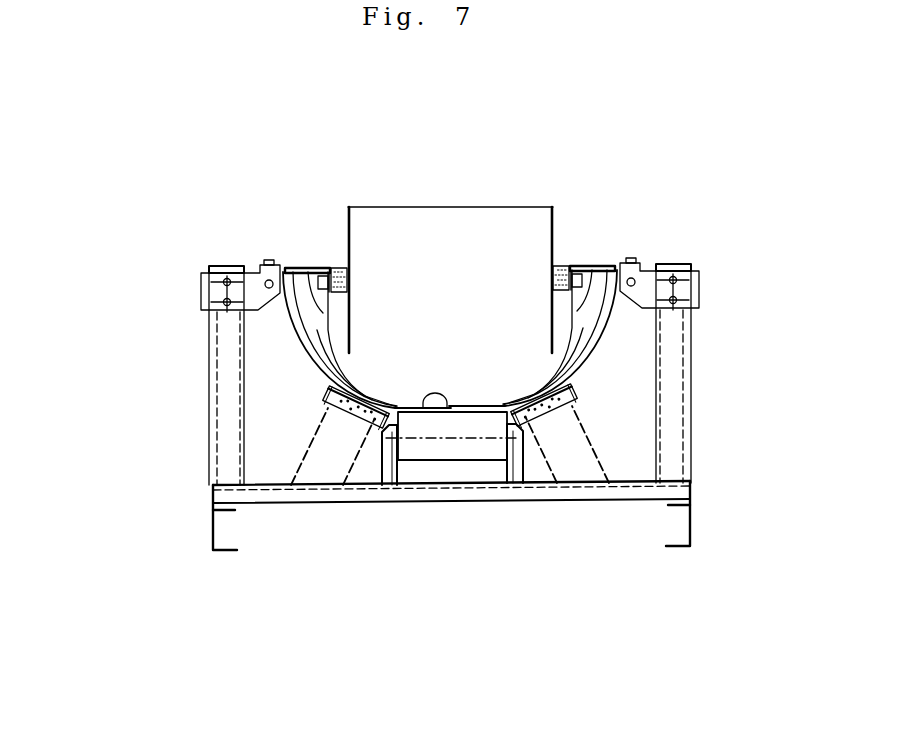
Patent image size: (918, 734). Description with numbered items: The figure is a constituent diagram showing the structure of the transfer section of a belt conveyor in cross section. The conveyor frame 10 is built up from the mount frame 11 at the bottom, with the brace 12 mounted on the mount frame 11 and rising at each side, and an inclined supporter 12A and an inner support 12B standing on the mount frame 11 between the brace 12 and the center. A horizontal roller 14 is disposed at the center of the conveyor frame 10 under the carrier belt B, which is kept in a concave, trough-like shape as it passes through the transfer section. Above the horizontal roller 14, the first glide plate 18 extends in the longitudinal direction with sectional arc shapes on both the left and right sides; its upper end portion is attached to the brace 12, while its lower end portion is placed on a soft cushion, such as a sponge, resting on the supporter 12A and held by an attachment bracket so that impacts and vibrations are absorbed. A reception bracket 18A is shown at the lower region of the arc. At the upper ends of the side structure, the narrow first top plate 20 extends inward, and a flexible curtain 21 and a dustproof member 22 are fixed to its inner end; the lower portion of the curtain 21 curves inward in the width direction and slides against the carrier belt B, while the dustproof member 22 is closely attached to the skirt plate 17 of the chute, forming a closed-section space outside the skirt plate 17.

The conveyor frame 10 is at (193, 308).
The mount frame 11 is at (213, 531).
The brace 12 is at (226, 382).
The supporter 12A is at (328, 468).
The support post 12B is at (390, 477).
The horizontal roller 14 is at (482, 443).
The carrier belt B is at (433, 393).
The skirt plate 17 is at (350, 238).
The first glide plate 18 is at (297, 336).
The reception bracket 18A is at (320, 406).
The first top plate 20 is at (298, 270).
The curtain 21 is at (310, 270).
The dustproof member 22 is at (338, 268).